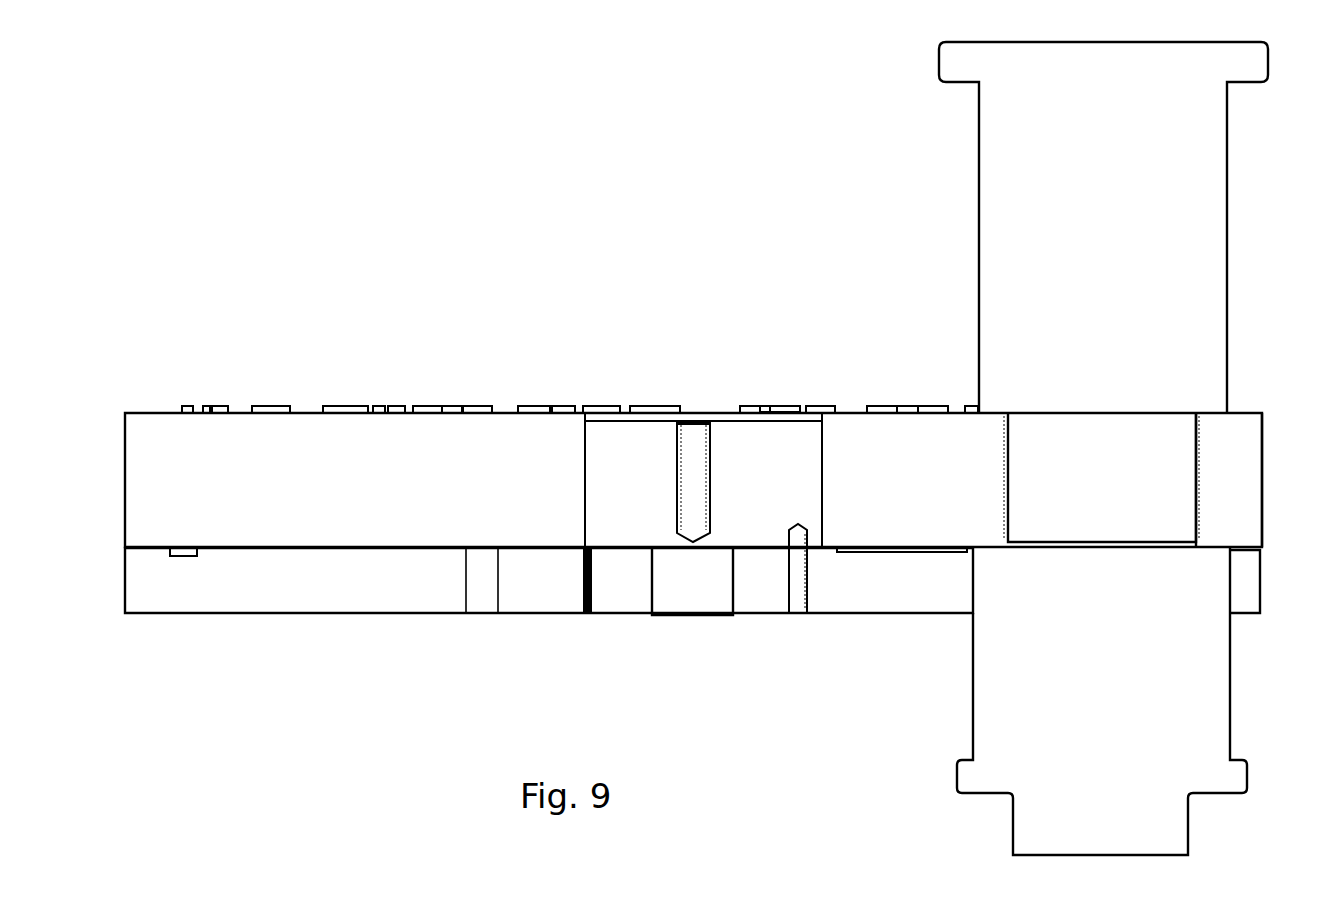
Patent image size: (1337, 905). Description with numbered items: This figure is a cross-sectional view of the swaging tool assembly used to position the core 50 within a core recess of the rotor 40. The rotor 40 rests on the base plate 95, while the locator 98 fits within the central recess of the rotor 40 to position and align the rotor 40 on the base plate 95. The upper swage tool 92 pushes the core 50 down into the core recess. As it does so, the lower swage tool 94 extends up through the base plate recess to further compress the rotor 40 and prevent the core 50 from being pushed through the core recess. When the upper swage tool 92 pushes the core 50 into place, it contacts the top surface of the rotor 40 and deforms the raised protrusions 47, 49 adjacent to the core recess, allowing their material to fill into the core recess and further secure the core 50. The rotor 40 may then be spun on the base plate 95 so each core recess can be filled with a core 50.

The upper swage tool 92 is at (1202, 228).
The lower swage tool 94 is at (1200, 692).
The locator 98 is at (620, 448).
The raised protrusion 47 is at (786, 410).
The raised protrusion 49 is at (826, 410).
The core 50 is at (1106, 488).
The rotor 40 is at (1235, 488).
The base plate 95 is at (1250, 592).